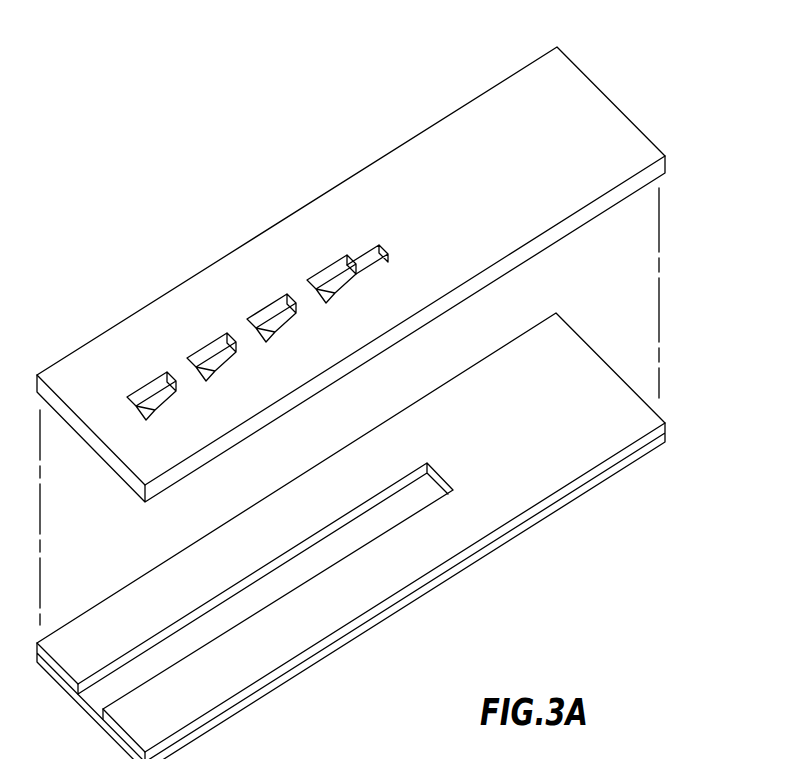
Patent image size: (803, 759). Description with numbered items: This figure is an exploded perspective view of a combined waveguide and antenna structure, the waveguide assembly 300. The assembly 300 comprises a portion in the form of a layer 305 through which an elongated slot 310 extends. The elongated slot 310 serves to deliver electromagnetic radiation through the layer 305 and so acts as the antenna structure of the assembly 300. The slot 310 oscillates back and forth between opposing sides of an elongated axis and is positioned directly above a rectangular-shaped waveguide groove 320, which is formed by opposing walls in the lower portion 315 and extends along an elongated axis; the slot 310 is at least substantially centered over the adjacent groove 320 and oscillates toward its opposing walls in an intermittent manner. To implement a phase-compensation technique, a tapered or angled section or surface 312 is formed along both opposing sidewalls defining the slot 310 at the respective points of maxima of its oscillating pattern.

The waveguide assembly 300 is at (654, 100).
The layer 305 is at (568, 85).
The elongated slot 310 is at (336, 266).
The tapered and/or angled section/surface 312 is at (310, 297).
The lower substrate / base plate 315 is at (573, 368).
The waveguide groove 320 is at (418, 492).